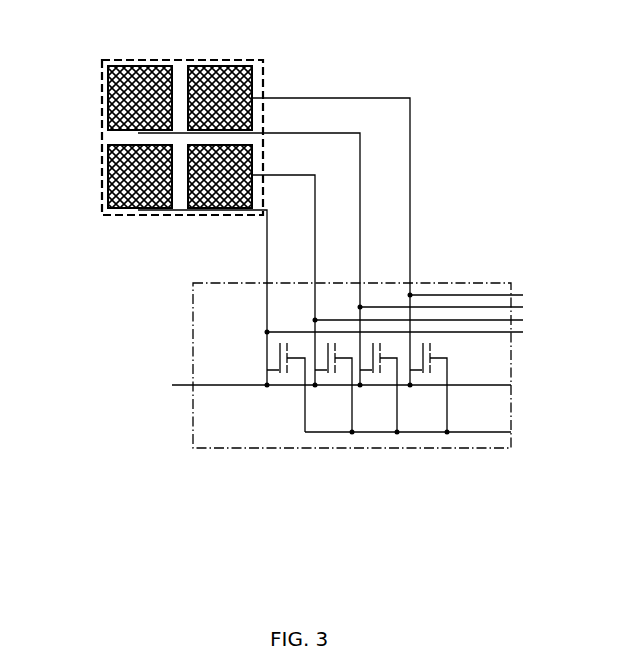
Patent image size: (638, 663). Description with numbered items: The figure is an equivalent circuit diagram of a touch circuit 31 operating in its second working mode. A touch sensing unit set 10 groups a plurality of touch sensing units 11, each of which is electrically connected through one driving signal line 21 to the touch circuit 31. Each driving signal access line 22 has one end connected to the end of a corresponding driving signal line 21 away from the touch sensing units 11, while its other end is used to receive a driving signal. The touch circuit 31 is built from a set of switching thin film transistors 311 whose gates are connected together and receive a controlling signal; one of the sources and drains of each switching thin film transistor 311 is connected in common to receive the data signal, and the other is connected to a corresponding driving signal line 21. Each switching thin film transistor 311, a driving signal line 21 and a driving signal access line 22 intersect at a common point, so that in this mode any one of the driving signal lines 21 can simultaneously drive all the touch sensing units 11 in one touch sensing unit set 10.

The touch sensing unit set 10 is at (102, 71).
The touch sensing unit 11 is at (136, 70).
The driving signal line 21 is at (410, 170).
The driving signal access line 22 is at (423, 295).
The touch circuit 31 is at (513, 387).
The switching thin film transistor 311 is at (258, 352).